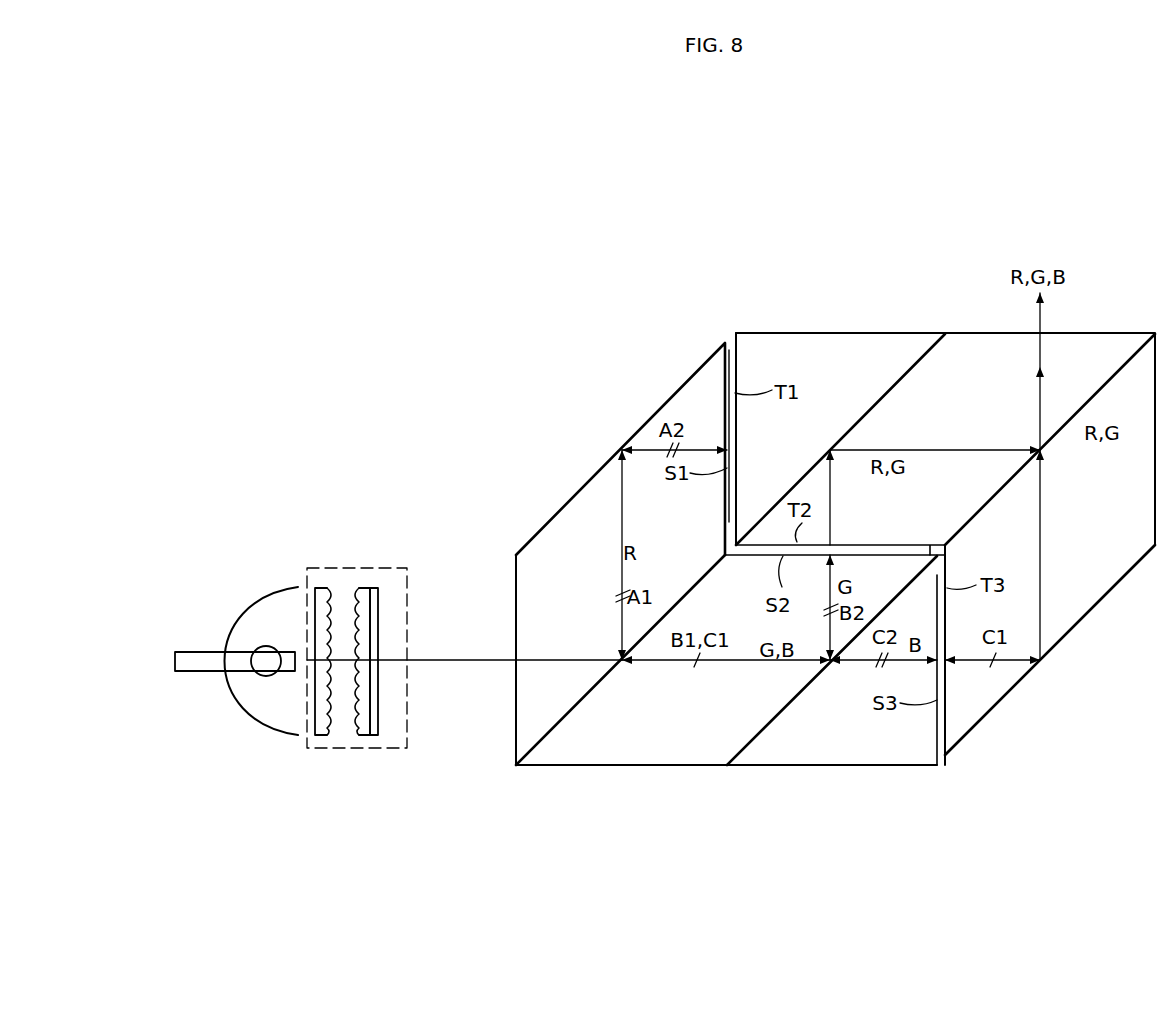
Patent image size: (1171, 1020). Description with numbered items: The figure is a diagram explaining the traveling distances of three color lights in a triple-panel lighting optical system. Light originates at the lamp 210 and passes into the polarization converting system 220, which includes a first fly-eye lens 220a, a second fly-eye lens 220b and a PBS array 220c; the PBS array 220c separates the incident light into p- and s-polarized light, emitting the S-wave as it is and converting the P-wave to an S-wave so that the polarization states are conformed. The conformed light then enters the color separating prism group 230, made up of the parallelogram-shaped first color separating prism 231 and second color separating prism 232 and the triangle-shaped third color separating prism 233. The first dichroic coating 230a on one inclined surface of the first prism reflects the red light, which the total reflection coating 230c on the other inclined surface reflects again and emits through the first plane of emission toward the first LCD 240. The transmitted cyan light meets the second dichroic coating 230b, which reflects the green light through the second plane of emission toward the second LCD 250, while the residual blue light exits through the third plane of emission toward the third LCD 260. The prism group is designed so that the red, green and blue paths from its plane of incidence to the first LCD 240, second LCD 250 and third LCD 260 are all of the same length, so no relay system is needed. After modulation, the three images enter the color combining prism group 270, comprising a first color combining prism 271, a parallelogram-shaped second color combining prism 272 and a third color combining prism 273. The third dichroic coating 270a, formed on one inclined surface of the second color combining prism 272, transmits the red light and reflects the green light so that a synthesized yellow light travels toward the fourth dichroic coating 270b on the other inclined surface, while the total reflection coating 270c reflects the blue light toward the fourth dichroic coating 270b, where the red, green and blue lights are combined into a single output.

The lamp 210 is at (242, 703).
The polarization converting system 220 is at (388, 623).
The first fly-eye lens 220a is at (322, 588).
The second fly-eye lens 220b is at (362, 590).
The PBS array 220c is at (378, 592).
The color separating prism group 230 is at (715, 620).
The first dichroic coating 230a is at (673, 608).
The second dichroic coating 230b is at (783, 709).
The total reflection coating 230c is at (563, 505).
The first color separating prism 231 is at (524, 742).
The second color separating prism 232 is at (618, 747).
The third color separating prism 233 is at (792, 755).
The first LCD 240 is at (729, 355).
The second LCD 250 is at (880, 545).
The third LCD 260 is at (940, 750).
The color combining prism group 270 is at (945, 475).
The third dichroic coating 270a is at (927, 350).
The fourth dichroic coating 270b is at (972, 518).
The total reflection coating 270c is at (1115, 585).
The first color combining prism 271 is at (1127, 400).
The second color combining prism 272 is at (992, 355).
The third color combining prism 273 is at (875, 357).